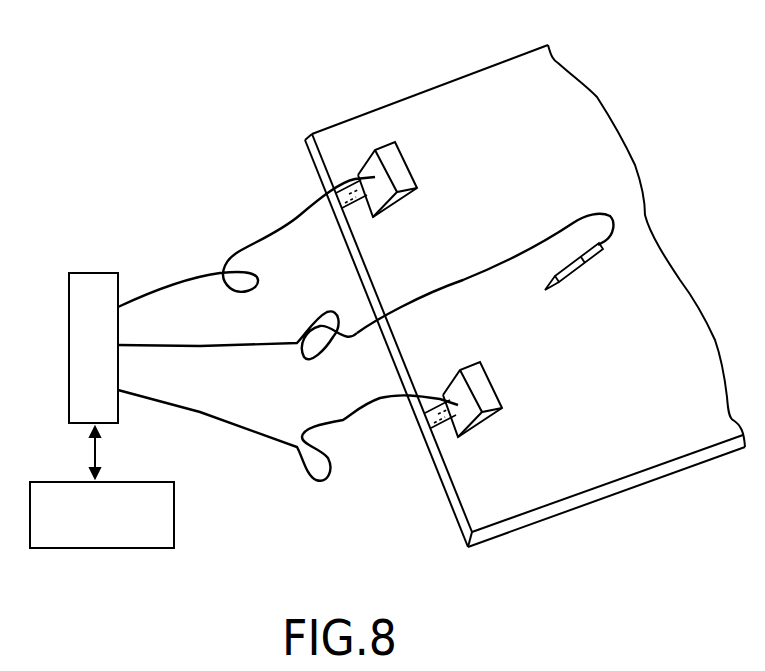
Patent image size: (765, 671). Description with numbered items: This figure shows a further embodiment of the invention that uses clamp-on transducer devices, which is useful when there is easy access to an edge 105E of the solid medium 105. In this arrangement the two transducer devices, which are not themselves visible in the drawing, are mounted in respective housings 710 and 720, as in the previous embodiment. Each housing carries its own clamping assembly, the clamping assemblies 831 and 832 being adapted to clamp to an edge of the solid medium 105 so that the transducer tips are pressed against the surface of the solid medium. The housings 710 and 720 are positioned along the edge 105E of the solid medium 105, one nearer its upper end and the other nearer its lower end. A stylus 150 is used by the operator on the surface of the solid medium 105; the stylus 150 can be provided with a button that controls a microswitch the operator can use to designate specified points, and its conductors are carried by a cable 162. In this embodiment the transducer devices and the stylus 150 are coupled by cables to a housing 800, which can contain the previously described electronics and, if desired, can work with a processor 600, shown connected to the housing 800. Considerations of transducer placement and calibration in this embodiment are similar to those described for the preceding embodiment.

The solid medium 105 is at (483, 93).
The edge of the solid medium 105E is at (443, 485).
The housing 710 is at (372, 163).
The housing 720 is at (475, 373).
The clamping assembly 831 is at (360, 213).
The clamping assembly 832 is at (445, 433).
The cable 162 is at (503, 259).
The stylus 150 is at (590, 263).
The housing 800 is at (98, 282).
The processor 600 is at (120, 542).